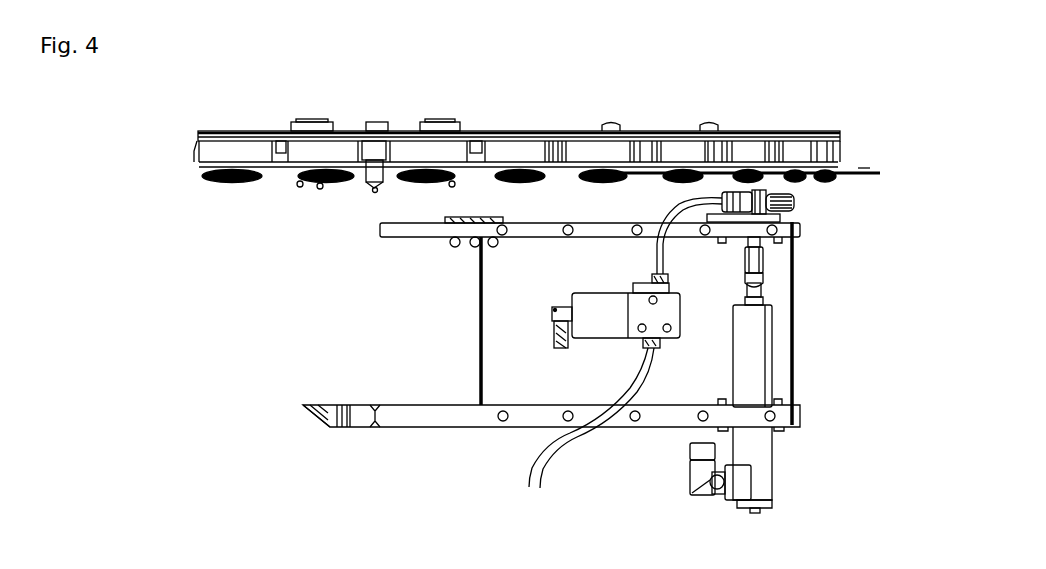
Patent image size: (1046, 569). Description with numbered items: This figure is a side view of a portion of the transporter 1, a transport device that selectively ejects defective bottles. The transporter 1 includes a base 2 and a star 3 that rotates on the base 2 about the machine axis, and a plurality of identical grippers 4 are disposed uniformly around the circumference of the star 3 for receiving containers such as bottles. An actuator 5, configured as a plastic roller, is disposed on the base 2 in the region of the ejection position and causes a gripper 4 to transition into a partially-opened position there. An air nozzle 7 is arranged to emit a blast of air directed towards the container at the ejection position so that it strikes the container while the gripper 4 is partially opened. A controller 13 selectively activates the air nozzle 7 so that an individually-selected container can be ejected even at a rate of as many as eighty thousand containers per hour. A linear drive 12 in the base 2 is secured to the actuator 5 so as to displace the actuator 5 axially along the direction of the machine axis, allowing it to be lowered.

The transporter 1 is at (652, 99).
The base 2 is at (826, 311).
The star 3 is at (880, 152).
The gripper 4 is at (858, 161).
The actuator 5 is at (760, 186).
The air nozzle 7 is at (790, 206).
The linear drive 12 is at (750, 360).
The controller 13 is at (600, 323).